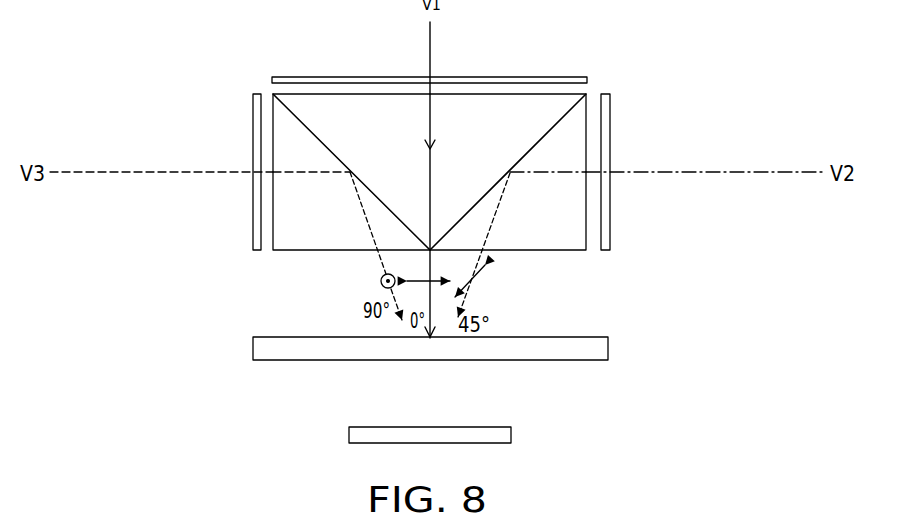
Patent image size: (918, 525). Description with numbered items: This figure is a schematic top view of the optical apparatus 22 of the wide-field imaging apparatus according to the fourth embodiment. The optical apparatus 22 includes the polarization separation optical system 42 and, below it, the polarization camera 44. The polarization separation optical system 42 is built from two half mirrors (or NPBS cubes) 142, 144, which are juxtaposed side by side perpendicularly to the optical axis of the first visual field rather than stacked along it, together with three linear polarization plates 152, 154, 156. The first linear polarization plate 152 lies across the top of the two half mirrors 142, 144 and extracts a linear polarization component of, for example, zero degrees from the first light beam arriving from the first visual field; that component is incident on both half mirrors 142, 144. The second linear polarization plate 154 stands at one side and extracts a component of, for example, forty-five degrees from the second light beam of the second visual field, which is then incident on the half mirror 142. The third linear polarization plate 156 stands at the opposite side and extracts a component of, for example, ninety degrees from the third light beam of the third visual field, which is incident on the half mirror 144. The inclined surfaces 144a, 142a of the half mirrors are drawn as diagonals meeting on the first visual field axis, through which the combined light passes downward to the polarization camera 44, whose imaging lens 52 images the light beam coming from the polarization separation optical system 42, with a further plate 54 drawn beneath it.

The optical apparatus 22 is at (697, 315).
The polarization separation optical system 42 is at (636, 261).
The polarization camera 44 is at (232, 335).
The imaging lens 52 is at (610, 347).
The reflector plate 54 is at (513, 434).
The half mirror 142 is at (482, 122).
The second reflecting surface 142a is at (567, 110).
The half mirror 144 is at (362, 122).
The first reflecting surface 144a is at (298, 110).
The first linear polarization plate 152 is at (523, 77).
The second linear polarization plate 154 is at (253, 134).
The third linear polarization plate 156 is at (612, 135).